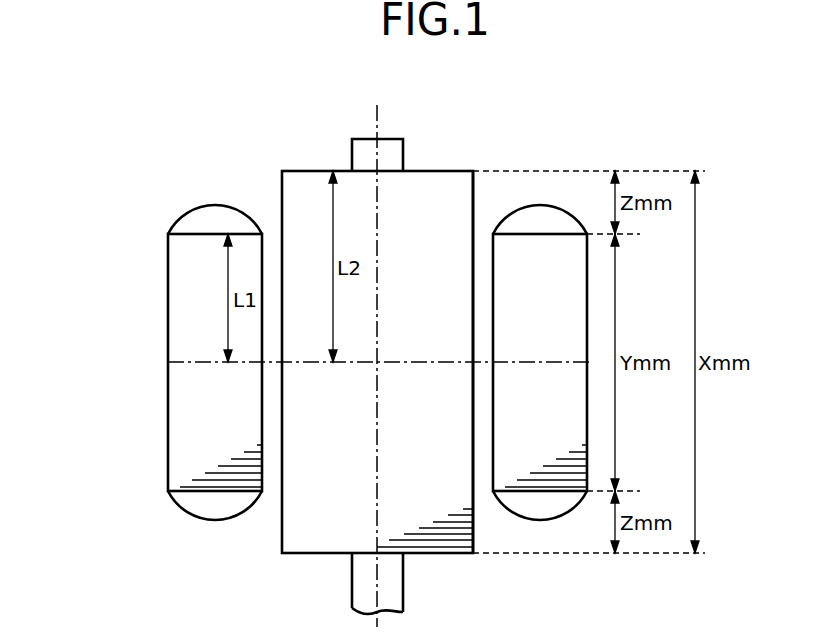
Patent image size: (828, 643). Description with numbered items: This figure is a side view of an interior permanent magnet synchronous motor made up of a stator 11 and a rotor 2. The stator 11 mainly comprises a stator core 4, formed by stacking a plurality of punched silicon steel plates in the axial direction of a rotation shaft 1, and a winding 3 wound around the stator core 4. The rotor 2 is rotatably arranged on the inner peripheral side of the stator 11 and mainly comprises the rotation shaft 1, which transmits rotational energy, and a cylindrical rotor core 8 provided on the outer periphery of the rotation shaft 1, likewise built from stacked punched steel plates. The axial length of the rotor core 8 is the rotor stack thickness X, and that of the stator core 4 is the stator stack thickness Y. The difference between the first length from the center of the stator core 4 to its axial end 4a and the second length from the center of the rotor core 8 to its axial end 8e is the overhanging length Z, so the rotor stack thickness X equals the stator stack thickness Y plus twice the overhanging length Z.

The rotation shaft 1 is at (389, 140).
The rotor 2 is at (312, 171).
The winding 3 is at (215, 205).
The stator core 4 is at (167, 276).
The axial end of stator core 4a is at (197, 233).
The rotor core 8 is at (297, 196).
The axial end of rotor core 8e is at (433, 171).
The stator 11 is at (181, 328).